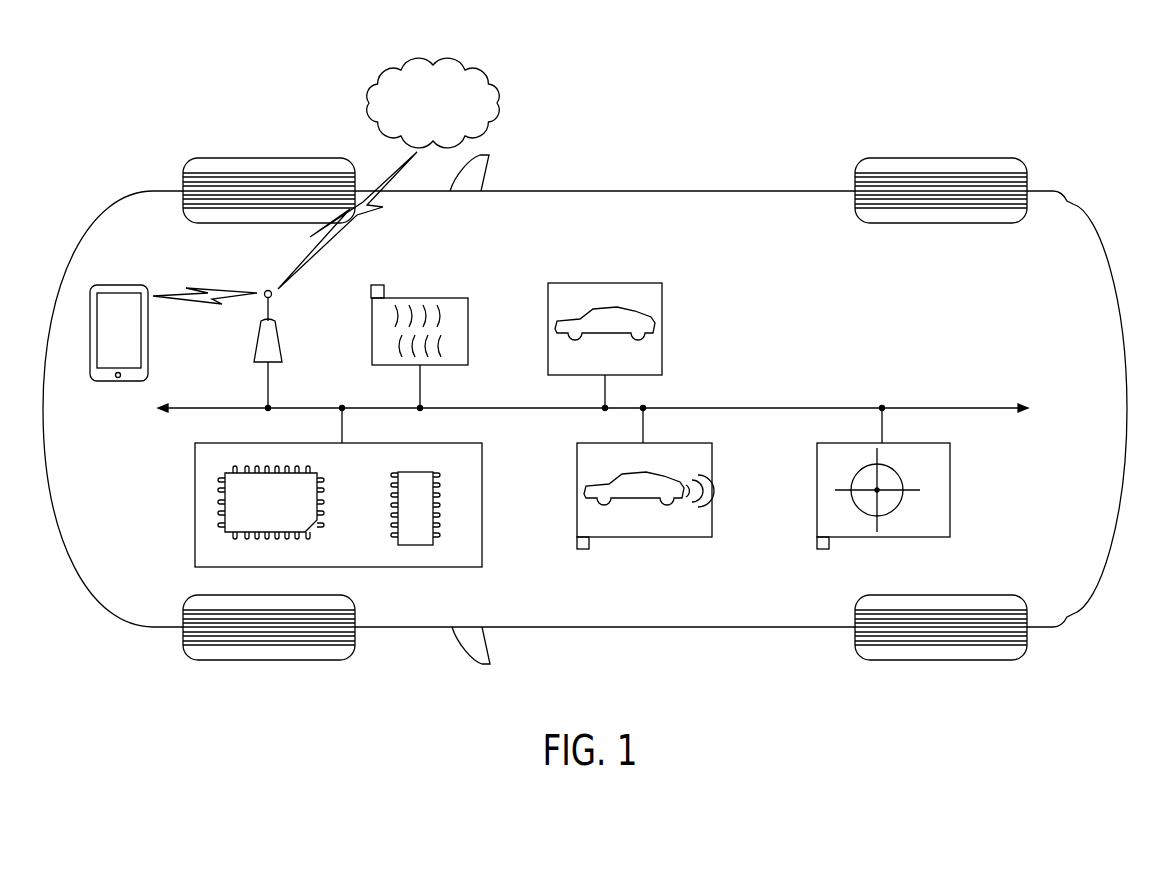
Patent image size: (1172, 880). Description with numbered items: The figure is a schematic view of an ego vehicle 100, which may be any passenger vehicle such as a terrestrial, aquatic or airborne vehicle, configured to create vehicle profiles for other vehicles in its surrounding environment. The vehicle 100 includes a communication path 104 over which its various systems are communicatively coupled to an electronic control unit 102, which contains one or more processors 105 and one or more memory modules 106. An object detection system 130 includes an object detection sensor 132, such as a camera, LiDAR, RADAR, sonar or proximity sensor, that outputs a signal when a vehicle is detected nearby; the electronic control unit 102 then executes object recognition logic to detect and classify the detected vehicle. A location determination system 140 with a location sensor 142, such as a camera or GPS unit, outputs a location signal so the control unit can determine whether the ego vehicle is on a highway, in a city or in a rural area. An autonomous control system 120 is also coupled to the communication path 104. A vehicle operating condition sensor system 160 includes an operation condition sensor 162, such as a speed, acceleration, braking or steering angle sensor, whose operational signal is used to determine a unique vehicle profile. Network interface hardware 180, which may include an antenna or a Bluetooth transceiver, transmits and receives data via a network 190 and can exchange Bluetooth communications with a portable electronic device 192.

The vehicle 100 is at (958, 145).
The electronic control unit 102 is at (373, 487).
The communication path 104 is at (232, 408).
The processor 105 is at (307, 530).
The memory module 106 is at (394, 473).
The autonomous control system 120 is at (605, 282).
The object detection system 130 is at (454, 319).
The object detection sensor 132 is at (378, 282).
The location determination system 140 is at (905, 507).
The location sensor 142 is at (822, 550).
The vehicle operating condition sensor system 160 is at (663, 506).
The operation condition sensor 162 is at (583, 550).
The network interface hardware 180 is at (270, 313).
The network 190 is at (358, 100).
The portable electronic device 192 is at (118, 384).